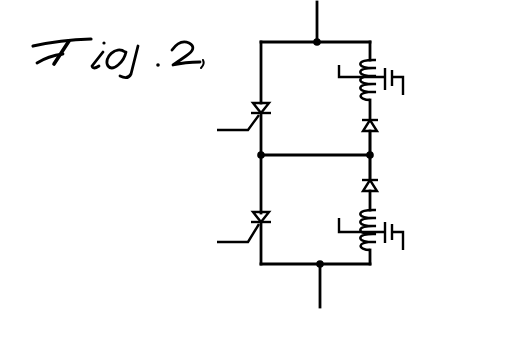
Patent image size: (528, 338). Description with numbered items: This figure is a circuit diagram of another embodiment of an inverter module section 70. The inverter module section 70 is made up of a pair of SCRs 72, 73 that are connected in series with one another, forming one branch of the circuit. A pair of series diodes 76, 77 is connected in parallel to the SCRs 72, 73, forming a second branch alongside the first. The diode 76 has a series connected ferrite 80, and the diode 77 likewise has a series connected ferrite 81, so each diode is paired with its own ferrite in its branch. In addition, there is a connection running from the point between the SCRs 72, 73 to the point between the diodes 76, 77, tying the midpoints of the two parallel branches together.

The inverter module section 70 is at (387, 134).
The SCR 72 is at (252, 110).
The SCR 73 is at (252, 218).
The series diode 76 is at (378, 129).
The series diode 77 is at (377, 190).
The ferrite 80 is at (375, 66).
The ferrite 81 is at (378, 236).